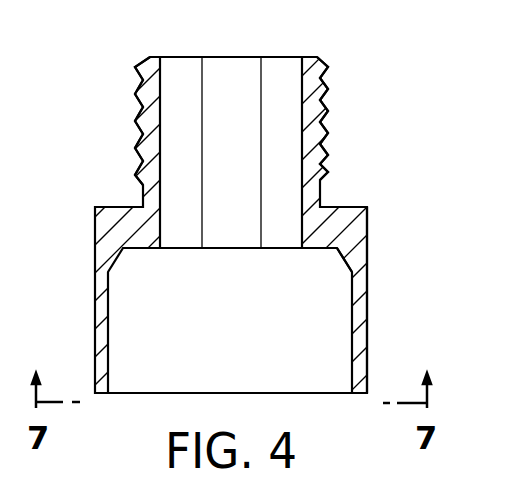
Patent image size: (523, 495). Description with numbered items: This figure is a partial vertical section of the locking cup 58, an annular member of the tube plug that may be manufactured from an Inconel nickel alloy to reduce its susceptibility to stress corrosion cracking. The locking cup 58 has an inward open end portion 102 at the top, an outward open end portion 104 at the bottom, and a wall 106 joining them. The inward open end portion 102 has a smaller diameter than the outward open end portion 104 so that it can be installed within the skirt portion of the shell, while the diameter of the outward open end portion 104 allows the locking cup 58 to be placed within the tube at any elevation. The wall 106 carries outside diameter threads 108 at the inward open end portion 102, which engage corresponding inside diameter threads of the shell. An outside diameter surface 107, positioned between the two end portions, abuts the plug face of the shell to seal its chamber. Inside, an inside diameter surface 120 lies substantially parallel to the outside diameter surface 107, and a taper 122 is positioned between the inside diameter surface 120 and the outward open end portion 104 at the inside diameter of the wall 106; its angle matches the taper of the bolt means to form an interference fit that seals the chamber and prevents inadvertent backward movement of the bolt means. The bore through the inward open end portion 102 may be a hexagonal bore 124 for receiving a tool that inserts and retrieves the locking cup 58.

The locking cup 58 is at (94, 293).
The inward open end portion 102 is at (320, 86).
The outward open end portion 104 is at (368, 359).
The wall 106 is at (370, 258).
The outside diameter surface 107 is at (345, 208).
The outside diameter threads 108 is at (140, 137).
The inside diameter surface 120 is at (318, 253).
The taper 122 is at (350, 262).
The hexagonal bore 124 is at (211, 70).